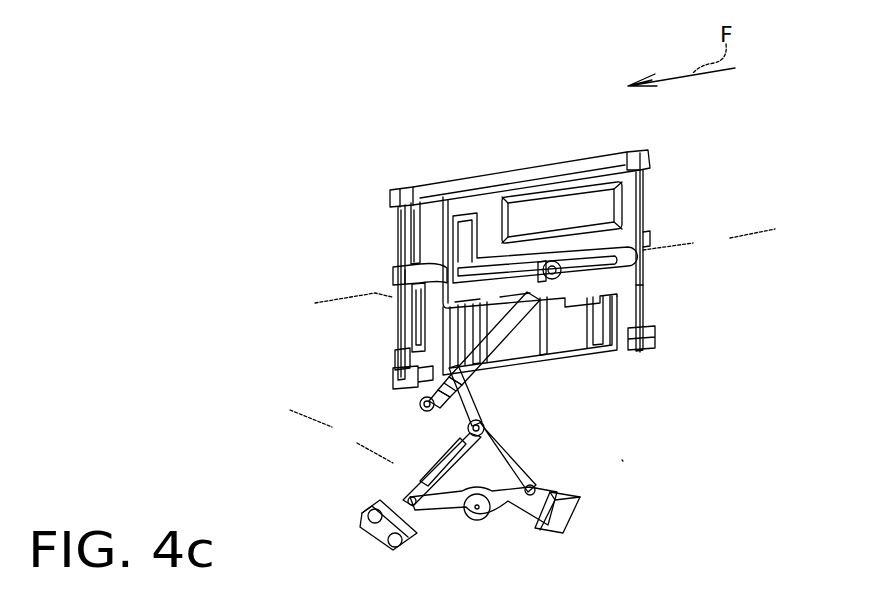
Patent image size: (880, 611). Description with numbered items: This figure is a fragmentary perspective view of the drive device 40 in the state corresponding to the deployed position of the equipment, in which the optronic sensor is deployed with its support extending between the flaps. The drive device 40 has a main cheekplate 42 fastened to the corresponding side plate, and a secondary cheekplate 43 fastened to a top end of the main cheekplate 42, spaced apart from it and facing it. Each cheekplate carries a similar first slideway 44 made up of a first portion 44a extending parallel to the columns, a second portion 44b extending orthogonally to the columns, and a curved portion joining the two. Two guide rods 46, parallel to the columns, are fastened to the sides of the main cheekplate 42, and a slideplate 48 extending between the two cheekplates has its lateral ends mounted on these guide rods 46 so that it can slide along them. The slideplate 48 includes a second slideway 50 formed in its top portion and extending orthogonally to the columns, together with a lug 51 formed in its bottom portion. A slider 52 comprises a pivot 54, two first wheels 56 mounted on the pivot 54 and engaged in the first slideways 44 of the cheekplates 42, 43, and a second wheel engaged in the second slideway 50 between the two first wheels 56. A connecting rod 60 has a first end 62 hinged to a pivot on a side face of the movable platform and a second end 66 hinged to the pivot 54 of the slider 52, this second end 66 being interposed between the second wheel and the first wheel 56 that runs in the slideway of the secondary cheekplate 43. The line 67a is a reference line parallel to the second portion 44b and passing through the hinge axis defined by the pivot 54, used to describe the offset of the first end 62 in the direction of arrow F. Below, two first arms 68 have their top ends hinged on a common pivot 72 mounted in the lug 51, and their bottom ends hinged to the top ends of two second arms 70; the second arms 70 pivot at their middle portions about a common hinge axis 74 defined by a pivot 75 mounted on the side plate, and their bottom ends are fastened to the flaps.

The drive device 40 is at (622, 460).
The main cheekplate 42 is at (433, 186).
The secondary cheekplate 43 is at (463, 196).
The first slideway 44 is at (395, 212).
The first portion of first slideway 44a is at (397, 223).
The second portion of first slideway 44b is at (405, 317).
The guide rod 46 is at (410, 252).
The slideplate 48 is at (582, 366).
The second slideway 50 is at (642, 245).
The lug 51 is at (478, 413).
The slider 52 is at (647, 276).
The pivot 54 is at (646, 296).
The first wheel 56 is at (578, 232).
The connecting rod 60 is at (504, 330).
The first end of connecting rod 62 is at (420, 402).
The second end of connecting rod 66 is at (542, 262).
The line parallel to second portion 67a is at (290, 306).
The first arm 68 is at (468, 470).
The second arm 70 is at (360, 526).
The common pivot 72 is at (466, 426).
The common hinge axis 74 is at (562, 547).
The pivot 75 is at (477, 525).